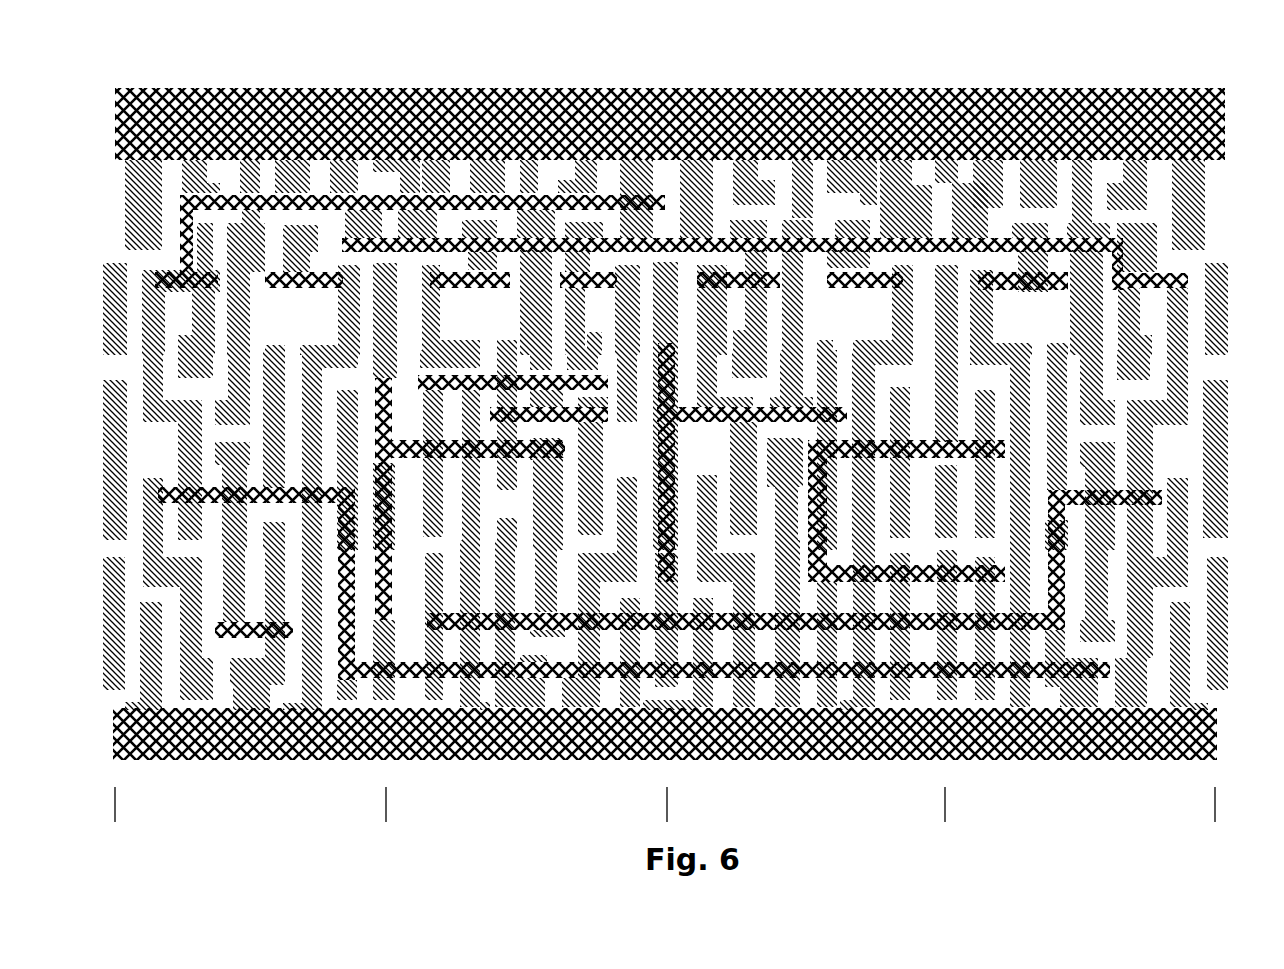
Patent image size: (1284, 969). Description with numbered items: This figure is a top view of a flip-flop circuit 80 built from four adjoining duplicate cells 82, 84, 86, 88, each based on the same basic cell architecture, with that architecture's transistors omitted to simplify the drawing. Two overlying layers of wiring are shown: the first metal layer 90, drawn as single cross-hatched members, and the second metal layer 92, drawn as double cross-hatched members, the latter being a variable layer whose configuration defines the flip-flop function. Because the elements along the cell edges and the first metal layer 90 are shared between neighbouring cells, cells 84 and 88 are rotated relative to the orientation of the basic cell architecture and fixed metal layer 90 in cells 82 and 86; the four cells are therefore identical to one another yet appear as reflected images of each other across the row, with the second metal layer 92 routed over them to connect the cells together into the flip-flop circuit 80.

The flip-flop circuit 80 is at (685, 430).
The cell 82 is at (261, 489).
The cell 84 is at (538, 489).
The cell 86 is at (827, 489).
The cell 88 is at (1119, 487).
The first metal layer 90 is at (1207, 222).
The second metal layer 92 is at (948, 89).